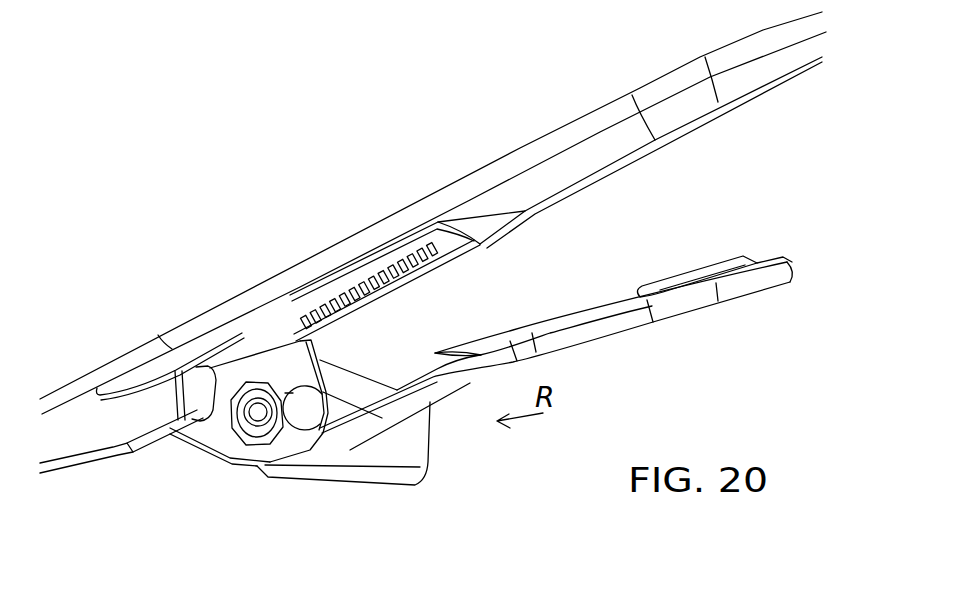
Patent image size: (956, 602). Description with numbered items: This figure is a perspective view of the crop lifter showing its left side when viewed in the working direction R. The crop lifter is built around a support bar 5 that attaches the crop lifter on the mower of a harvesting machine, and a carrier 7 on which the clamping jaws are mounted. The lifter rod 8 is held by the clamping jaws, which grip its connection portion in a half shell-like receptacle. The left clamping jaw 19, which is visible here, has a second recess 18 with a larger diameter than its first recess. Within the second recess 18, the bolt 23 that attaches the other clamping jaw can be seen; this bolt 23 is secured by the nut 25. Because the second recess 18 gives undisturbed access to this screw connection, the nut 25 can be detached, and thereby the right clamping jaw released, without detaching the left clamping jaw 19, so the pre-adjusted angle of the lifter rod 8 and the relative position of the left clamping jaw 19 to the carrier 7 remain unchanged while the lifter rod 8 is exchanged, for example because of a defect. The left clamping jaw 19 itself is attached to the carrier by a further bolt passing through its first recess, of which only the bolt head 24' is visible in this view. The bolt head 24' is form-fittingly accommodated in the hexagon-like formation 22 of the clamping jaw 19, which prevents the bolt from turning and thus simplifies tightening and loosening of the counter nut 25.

The support bar 5 is at (580, 313).
The carrier 7 is at (348, 398).
The lifter rod 8 is at (378, 230).
The second recess 18 is at (248, 440).
The clamping jaw 19 is at (212, 407).
The formation 22 is at (306, 407).
The bolt 23 is at (280, 421).
The bolt head 24' is at (400, 369).
The nut 25 is at (259, 412).